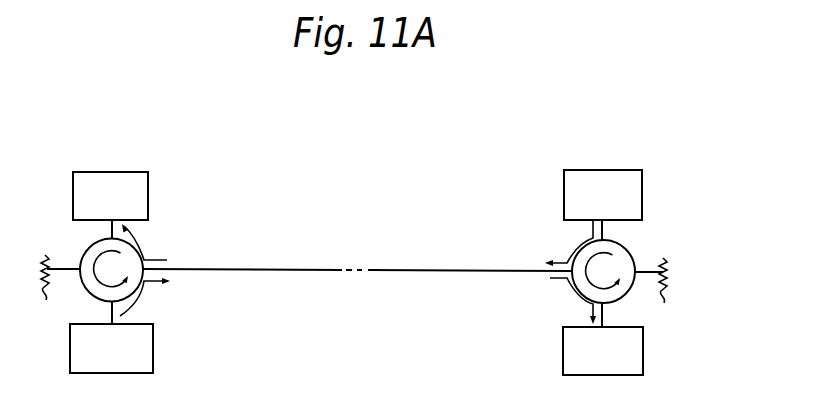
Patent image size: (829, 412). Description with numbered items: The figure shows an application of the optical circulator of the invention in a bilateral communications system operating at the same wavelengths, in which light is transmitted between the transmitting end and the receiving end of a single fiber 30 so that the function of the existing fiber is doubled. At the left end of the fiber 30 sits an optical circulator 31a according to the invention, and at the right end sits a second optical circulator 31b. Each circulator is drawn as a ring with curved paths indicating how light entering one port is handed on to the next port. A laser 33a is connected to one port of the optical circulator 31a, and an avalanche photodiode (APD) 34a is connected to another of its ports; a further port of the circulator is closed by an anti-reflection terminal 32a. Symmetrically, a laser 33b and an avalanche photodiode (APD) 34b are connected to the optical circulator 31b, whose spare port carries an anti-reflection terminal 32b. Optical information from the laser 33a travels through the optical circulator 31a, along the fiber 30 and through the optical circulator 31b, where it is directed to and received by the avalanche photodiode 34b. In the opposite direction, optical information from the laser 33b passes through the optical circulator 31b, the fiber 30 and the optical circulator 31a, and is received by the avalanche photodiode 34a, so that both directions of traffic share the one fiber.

The fiber 30 is at (392, 268).
The optical circulator 31a is at (133, 256).
The optical circulator 31b is at (635, 257).
The anti-reflection terminal 32a is at (53, 294).
The anti-reflection terminal 32b is at (671, 296).
The laser 33a is at (153, 347).
The laser 33b is at (642, 193).
The avalanche photodiode (APD) 34a is at (148, 195).
The avalanche photodiode (APD) 34b is at (563, 356).